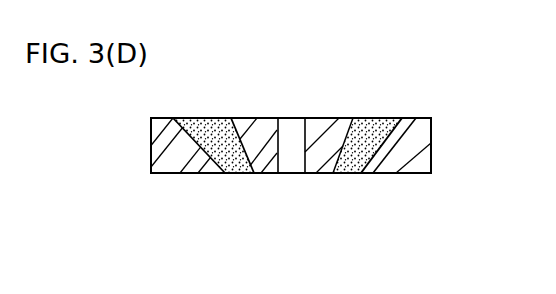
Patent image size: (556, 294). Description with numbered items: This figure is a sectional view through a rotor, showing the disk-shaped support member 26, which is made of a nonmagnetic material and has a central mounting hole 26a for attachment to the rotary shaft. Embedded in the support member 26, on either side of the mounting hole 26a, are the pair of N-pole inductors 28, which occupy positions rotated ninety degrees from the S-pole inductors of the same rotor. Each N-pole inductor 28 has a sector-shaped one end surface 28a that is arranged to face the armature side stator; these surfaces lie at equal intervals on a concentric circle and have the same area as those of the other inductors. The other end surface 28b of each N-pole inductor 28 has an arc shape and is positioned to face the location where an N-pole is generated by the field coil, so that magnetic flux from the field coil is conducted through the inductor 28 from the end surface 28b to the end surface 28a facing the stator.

The support member 26 is at (428, 170).
The mounting hole 26a is at (292, 155).
The N-pole inductor 28 is at (388, 135).
The one end surface 28a is at (203, 117).
The other end surface 28b is at (242, 172).